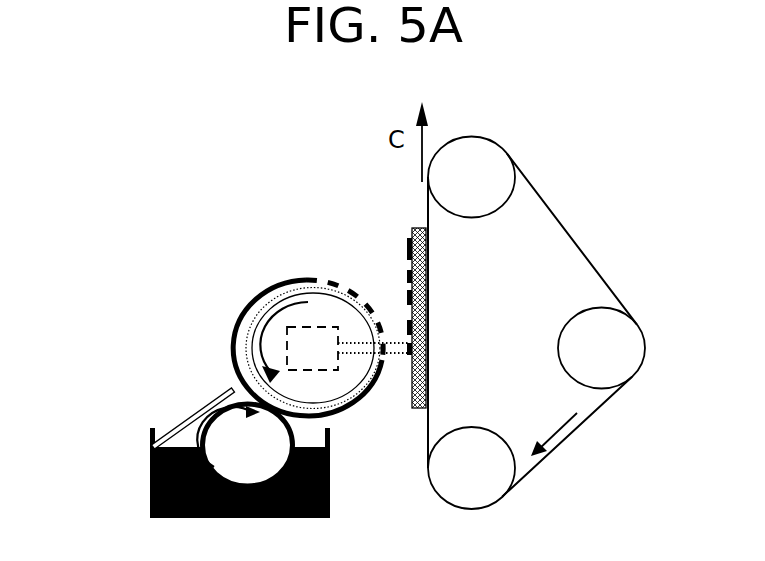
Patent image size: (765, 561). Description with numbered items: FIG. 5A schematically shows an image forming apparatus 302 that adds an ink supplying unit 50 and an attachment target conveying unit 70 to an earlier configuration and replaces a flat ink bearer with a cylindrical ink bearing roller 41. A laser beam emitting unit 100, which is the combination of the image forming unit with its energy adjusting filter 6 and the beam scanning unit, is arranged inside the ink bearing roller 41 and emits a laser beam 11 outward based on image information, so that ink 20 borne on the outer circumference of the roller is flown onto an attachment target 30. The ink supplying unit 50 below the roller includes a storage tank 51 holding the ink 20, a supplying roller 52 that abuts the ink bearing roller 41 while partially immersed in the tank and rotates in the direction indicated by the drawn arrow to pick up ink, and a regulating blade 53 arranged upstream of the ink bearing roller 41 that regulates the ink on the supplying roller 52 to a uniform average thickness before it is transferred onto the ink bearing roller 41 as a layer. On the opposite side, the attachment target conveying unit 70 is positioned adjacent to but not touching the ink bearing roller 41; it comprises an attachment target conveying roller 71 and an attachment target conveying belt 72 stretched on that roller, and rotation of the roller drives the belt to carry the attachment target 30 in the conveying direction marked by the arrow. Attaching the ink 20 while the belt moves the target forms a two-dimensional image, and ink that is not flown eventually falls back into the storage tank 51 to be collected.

The image forming apparatus 302 is at (162, 158).
The energy adjusting filter 6 is at (266, 293).
The ink bearing roller 41 is at (303, 281).
The laser beam emitting unit 100 is at (287, 338).
The laser beam 11 is at (406, 343).
The attachment target 30 is at (414, 227).
The attachment target conveying unit 70 is at (650, 183).
The attachment target conveying roller 71 is at (516, 180).
The attachment target conveying belt 72 is at (557, 219).
The ink supplying unit 50 is at (196, 391).
The storage tank 51 is at (151, 437).
The supplying roller 52 is at (290, 422).
The regulating blade 53 is at (212, 407).
The ink 20 is at (164, 495).